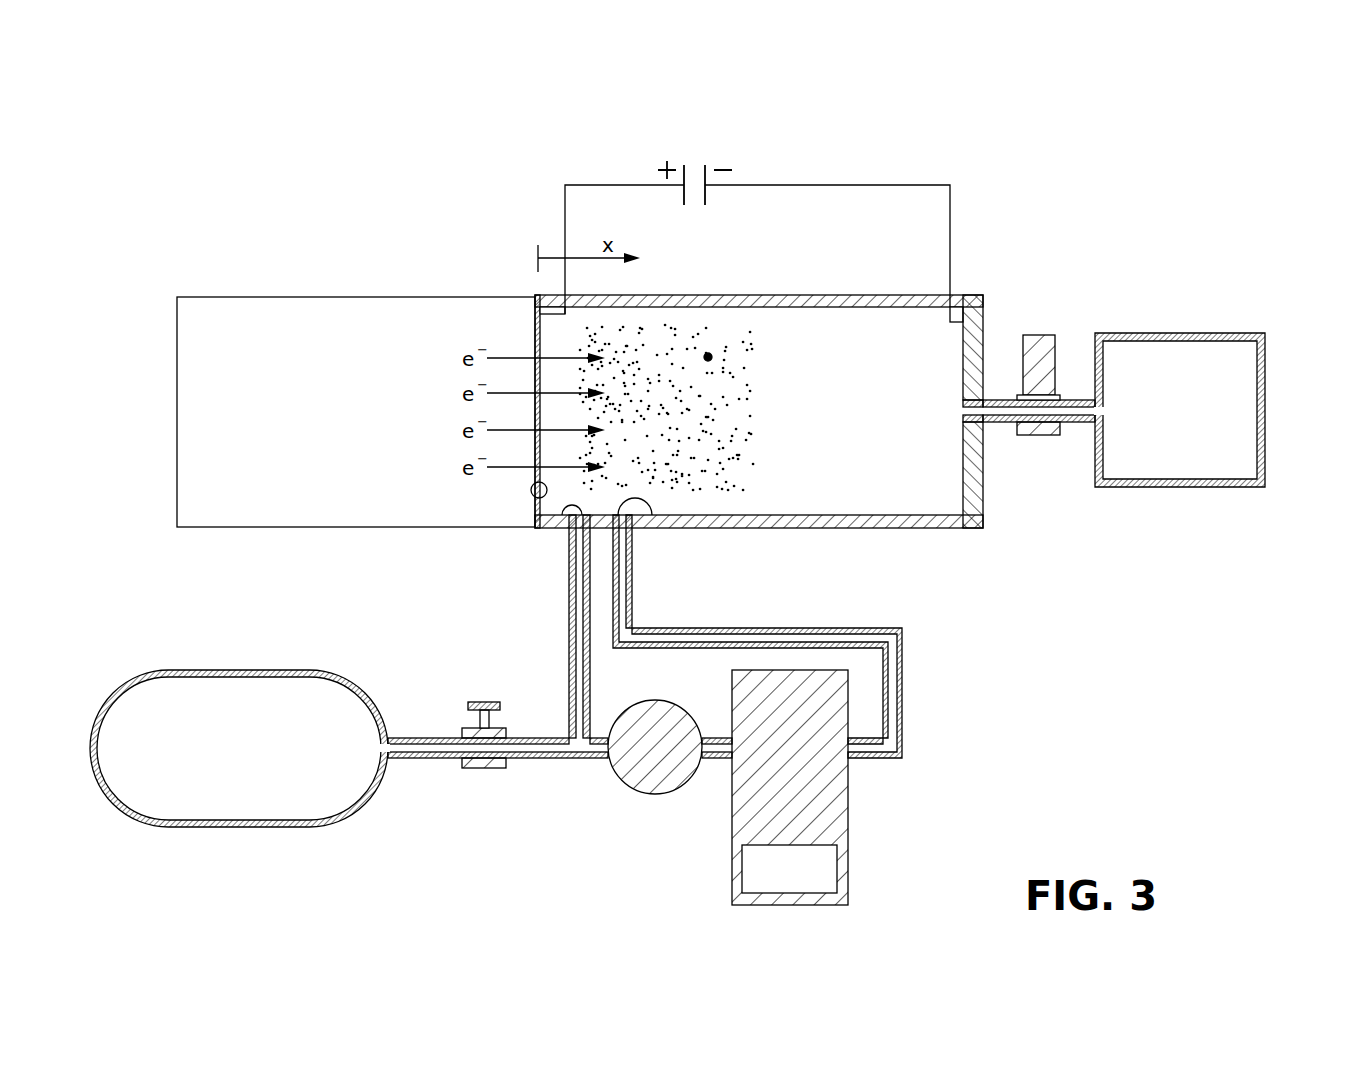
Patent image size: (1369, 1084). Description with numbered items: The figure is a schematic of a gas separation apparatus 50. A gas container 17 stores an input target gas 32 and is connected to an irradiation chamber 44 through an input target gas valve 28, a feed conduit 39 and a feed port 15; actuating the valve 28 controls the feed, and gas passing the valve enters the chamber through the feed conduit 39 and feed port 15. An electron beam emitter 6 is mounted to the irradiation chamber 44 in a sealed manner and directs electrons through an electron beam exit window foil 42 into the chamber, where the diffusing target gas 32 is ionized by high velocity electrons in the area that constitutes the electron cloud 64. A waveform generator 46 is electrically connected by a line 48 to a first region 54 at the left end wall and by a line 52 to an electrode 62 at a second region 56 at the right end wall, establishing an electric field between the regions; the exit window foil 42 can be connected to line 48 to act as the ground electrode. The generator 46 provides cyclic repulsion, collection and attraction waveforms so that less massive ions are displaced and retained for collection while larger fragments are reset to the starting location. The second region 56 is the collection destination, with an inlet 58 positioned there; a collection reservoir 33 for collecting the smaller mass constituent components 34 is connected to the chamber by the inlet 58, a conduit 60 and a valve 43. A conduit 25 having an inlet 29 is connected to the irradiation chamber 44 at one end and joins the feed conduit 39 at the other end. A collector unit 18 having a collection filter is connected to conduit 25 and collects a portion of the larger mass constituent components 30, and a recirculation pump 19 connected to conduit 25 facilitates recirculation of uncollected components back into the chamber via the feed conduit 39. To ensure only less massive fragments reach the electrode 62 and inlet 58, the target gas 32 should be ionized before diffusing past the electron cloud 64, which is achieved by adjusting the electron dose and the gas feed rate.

The electron beam emitter 6 is at (278, 318).
The feed port 15 is at (557, 528).
The gas container 17 is at (230, 827).
The collector unit 18 is at (848, 812).
The recirculation pump 19 is at (655, 795).
The conduit 25 is at (903, 652).
The input target gas valve 28 is at (488, 702).
The inlet 29 is at (645, 512).
The larger mass constituent components 30 is at (818, 863).
The target gas 32 is at (178, 697).
The collection reservoir 33 is at (1172, 333).
The smaller mass constituent components 34 is at (1237, 372).
The feed conduit 39 is at (569, 622).
The electron beam exit window foil 42 is at (535, 490).
The valve 43 is at (1032, 335).
The irradiation chamber 44 is at (778, 528).
The waveform generator 46 is at (727, 105).
The line 48 is at (565, 218).
The gas separation apparatus 50 is at (1095, 129).
The line 52 is at (868, 185).
The first region 54 is at (580, 332).
The second region 56 is at (936, 335).
The inlet 58 is at (965, 410).
The conduit 60 is at (1000, 424).
The electrode 62 is at (963, 373).
The electron cloud 64 is at (708, 357).